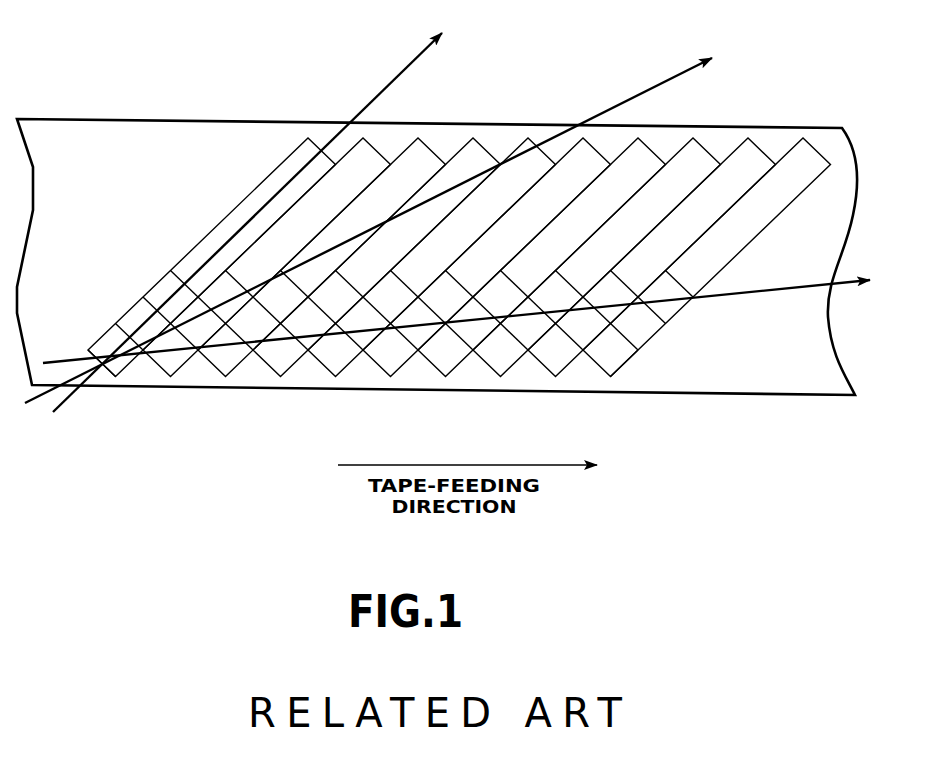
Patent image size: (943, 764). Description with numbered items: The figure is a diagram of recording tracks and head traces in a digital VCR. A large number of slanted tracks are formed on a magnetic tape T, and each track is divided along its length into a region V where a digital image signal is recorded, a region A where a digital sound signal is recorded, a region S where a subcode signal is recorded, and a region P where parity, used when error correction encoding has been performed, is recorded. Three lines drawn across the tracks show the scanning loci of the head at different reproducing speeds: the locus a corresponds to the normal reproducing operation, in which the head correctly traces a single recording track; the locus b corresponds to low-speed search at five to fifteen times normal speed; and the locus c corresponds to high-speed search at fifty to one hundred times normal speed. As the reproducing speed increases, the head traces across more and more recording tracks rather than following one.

The magnetic tape T is at (746, 394).
The scanning locus of the head at normal reproducing speed a is at (254, 212).
The scanning locus of the head in low-speed search b is at (378, 224).
The scanning locus of the head in high-speed search c is at (466, 316).
The parity region P is at (363, 357).
The subcode region S is at (381, 330).
The digital sound signal region A is at (408, 304).
The digital image signal region V is at (459, 257).